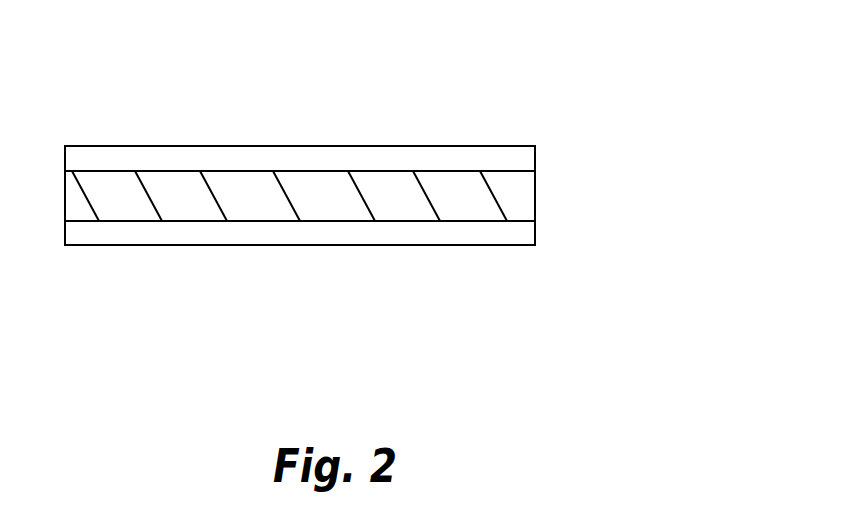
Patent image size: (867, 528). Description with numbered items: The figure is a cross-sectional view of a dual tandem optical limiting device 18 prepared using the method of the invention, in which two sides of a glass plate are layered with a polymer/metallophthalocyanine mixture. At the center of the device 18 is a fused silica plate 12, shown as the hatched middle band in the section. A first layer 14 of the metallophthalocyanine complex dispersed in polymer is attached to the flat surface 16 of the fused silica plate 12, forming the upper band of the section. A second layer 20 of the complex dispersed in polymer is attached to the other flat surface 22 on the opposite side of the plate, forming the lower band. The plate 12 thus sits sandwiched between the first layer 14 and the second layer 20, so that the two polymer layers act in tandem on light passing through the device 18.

The device 18 is at (586, 76).
The first layer 14 is at (537, 156).
The fused silica plate 12 is at (537, 193).
The second layer 20 is at (537, 232).
The flat surface 16 is at (435, 171).
The other flat surface 22 is at (453, 221).